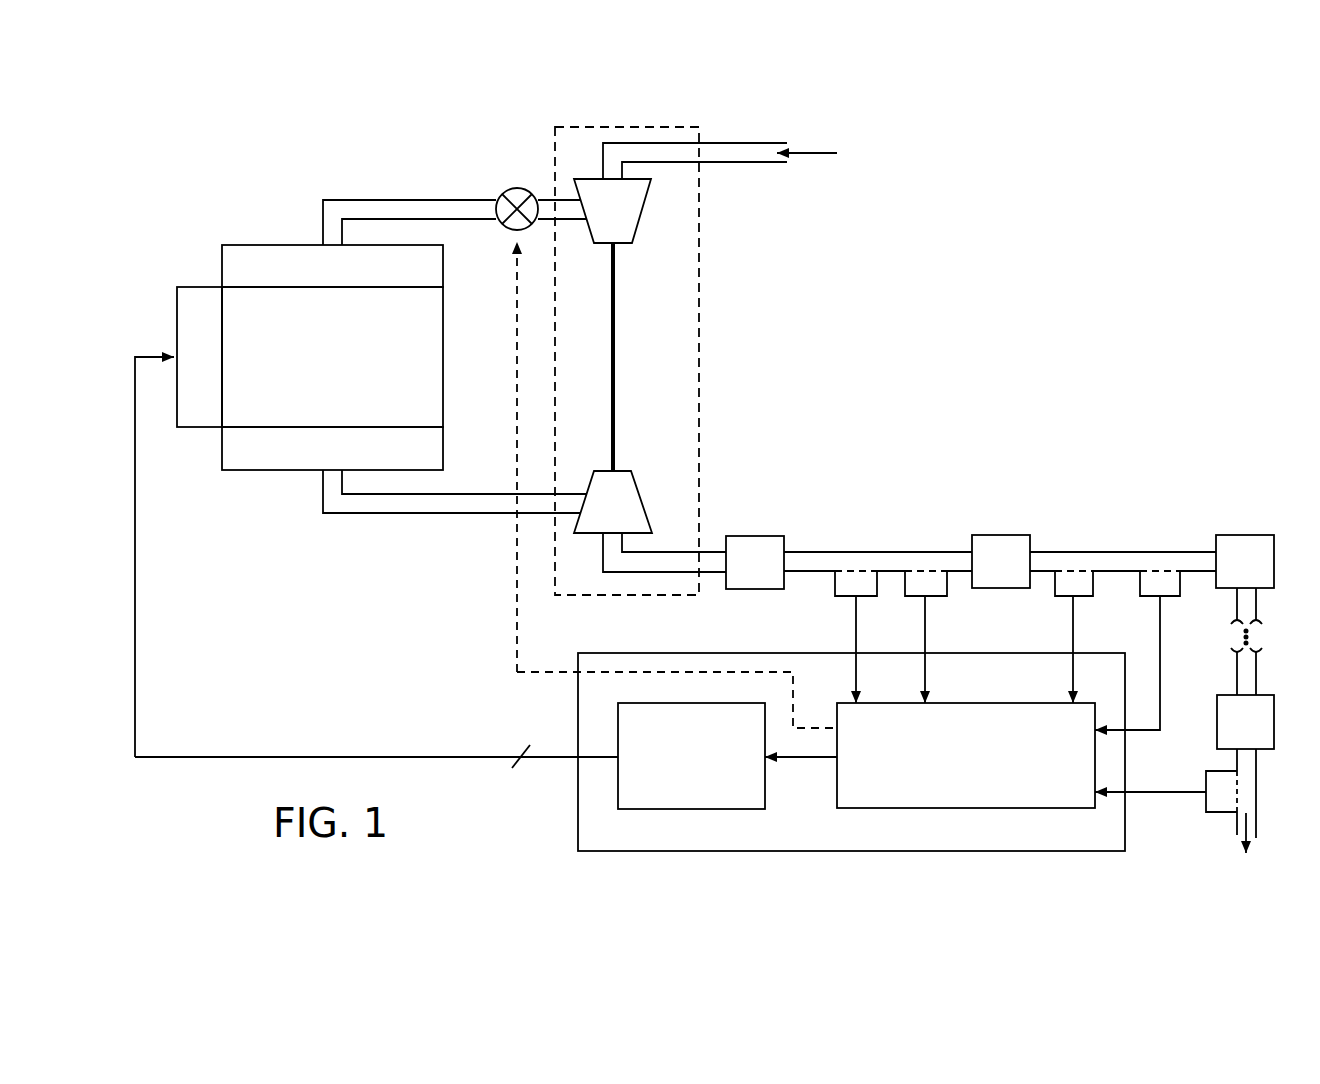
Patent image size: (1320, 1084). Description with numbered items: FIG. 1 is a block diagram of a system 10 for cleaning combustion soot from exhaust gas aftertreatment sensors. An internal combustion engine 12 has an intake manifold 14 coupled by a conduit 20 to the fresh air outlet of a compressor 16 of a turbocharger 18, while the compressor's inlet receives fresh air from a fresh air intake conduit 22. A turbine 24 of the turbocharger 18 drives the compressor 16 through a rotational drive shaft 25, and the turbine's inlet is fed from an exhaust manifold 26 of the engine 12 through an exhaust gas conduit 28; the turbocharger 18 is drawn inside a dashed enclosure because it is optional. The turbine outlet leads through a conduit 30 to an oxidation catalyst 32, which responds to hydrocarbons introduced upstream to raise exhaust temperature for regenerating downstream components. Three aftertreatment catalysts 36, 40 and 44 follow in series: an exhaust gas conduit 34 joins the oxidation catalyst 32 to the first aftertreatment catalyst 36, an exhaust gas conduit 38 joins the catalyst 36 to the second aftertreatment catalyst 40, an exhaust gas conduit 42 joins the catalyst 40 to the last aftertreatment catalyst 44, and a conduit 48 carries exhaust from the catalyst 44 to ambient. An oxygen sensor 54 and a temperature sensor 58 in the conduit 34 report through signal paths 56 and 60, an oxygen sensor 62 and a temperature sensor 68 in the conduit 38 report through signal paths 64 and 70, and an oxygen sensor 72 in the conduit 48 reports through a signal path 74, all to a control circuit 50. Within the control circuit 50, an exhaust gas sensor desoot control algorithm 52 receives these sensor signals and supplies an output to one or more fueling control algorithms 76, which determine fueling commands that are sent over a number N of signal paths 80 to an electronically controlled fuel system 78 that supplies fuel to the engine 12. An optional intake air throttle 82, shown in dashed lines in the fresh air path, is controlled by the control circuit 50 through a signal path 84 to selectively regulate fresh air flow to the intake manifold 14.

The system 10 is at (832, 405).
The internal combustion engine 12 is at (443, 358).
The intake manifold 14 is at (443, 268).
The compressor 16 is at (644, 214).
The turbocharger 18 is at (699, 362).
The conduit 20 is at (392, 199).
The fresh air intake conduit 22 is at (745, 163).
The turbine 24 is at (633, 490).
The rotational drive shaft 25 is at (616, 340).
The exhaust manifold 26 is at (272, 477).
The exhaust gas conduit 28 is at (421, 517).
The exhaust conduit 30 is at (633, 572).
The oxidation catalyst 32 is at (752, 535).
The exhaust gas conduit 34 is at (895, 550).
The exhaust gas aftertreatment catalyst 36 is at (1012, 534).
The exhaust gas conduit 38 is at (1118, 549).
The exhaust gas aftertreatment catalyst 40 is at (1245, 535).
The exhaust gas conduit 42 is at (1257, 604).
The exhaust gas aftertreatment catalyst 44 is at (1275, 718).
The conduit 48 is at (1257, 776).
The control circuit 50 is at (577, 803).
The exhaust gas sensor desoot control algorithm 52 is at (1023, 810).
The oxygen sensor 54 is at (835, 590).
The signal path 56 is at (855, 628).
The temperature sensor 58 is at (905, 591).
The signal path 60 is at (928, 628).
The oxygen sensor 62 is at (1053, 591).
The signal path 64 is at (1072, 628).
The temperature sensor 68 is at (1140, 590).
The signal path 70 is at (1162, 666).
The oxygen sensor 72 is at (1205, 780).
The signal path 74 is at (1168, 800).
The fueling control algorithm 76 is at (690, 810).
The fuel system 78 is at (197, 286).
The signal paths 80 is at (136, 585).
The intake air throttle 82 is at (516, 186).
The signal path 84 is at (514, 602).